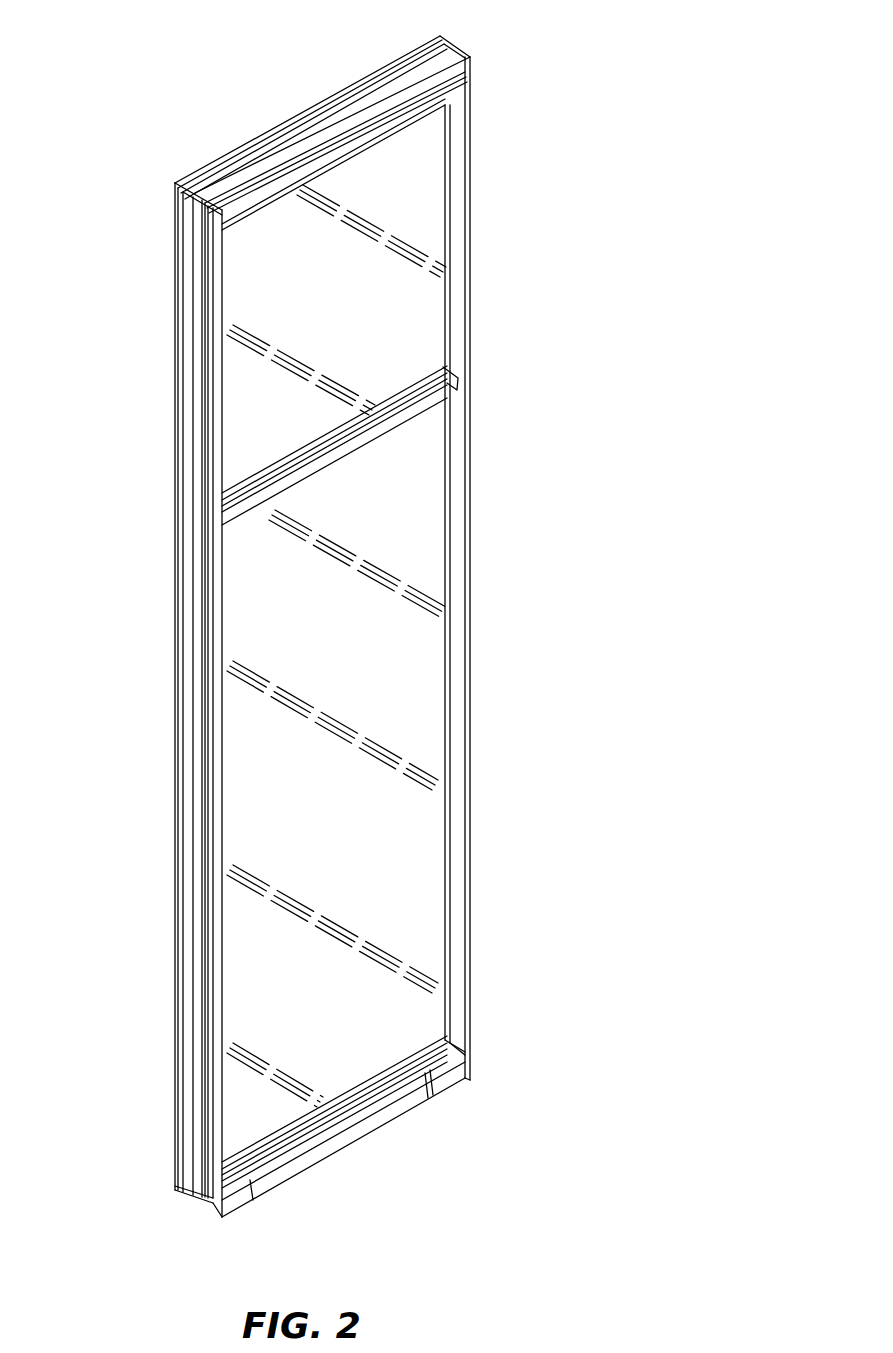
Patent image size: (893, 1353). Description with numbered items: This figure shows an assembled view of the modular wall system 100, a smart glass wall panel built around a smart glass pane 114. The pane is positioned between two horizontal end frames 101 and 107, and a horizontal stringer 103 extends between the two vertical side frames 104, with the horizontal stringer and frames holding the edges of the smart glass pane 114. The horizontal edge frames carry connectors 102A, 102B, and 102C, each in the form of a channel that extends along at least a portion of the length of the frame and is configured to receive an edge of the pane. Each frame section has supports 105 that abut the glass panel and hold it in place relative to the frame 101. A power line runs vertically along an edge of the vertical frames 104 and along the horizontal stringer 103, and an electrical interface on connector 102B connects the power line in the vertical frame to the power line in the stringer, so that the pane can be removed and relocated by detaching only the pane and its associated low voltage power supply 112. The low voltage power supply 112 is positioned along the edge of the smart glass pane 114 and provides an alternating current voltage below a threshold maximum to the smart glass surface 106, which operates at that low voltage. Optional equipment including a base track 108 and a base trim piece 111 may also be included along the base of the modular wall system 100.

The modular wall system 100 is at (556, 144).
The horizontal end frame 101 is at (347, 120).
The connector 102A is at (323, 178).
The connector 102B is at (250, 484).
The connector 102C is at (424, 1043).
The horizontal stringer 103 is at (418, 402).
The vertical side frame 104 is at (218, 675).
The support 105 is at (175, 195).
The smart glass surface 106 is at (278, 962).
The horizontal end frame 107 is at (437, 1060).
The base track 108 is at (200, 1198).
The base trim piece 111 is at (350, 1137).
The low voltage power supply 112 is at (300, 450).
The smart glass pane 114 is at (440, 633).